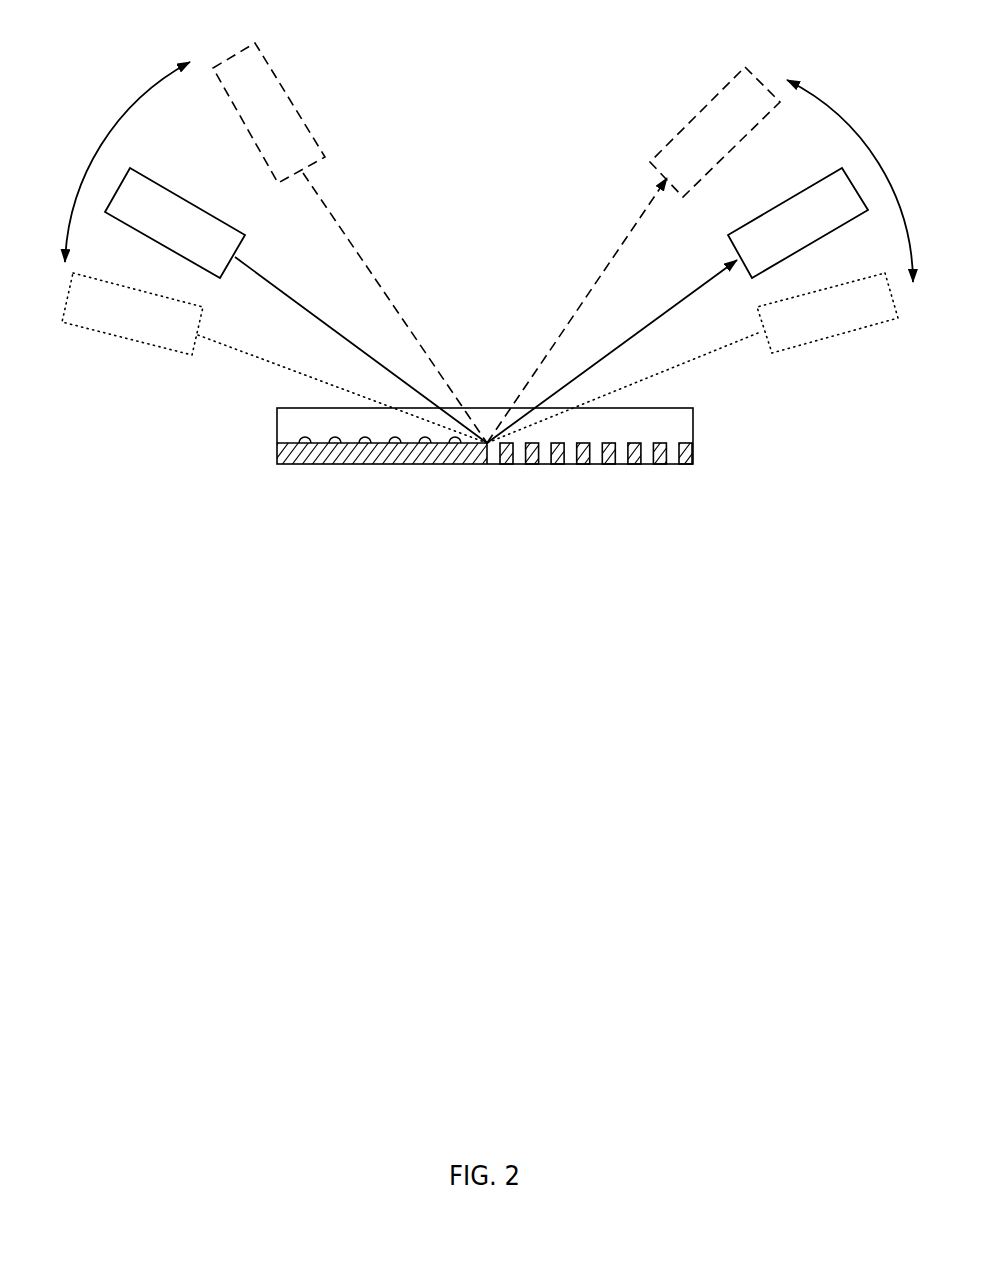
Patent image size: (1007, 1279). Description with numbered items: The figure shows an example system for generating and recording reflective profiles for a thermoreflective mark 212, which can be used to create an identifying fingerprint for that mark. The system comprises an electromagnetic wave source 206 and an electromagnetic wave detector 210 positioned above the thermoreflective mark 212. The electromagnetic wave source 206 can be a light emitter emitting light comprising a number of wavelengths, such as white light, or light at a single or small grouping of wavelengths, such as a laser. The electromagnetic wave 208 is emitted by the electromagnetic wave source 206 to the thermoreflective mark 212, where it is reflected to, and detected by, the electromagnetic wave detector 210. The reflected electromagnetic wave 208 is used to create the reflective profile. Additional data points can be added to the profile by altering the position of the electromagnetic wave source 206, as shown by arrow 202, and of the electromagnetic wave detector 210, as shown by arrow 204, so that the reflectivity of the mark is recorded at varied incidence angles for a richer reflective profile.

The arrow 202 is at (192, 62).
The arrow 204 is at (802, 76).
The electromagnetic wave source 206 is at (195, 203).
The electromagnetic wave 208 is at (293, 293).
The electromagnetic wave detector 210 is at (732, 250).
The thermoreflective mark 212 is at (276, 425).